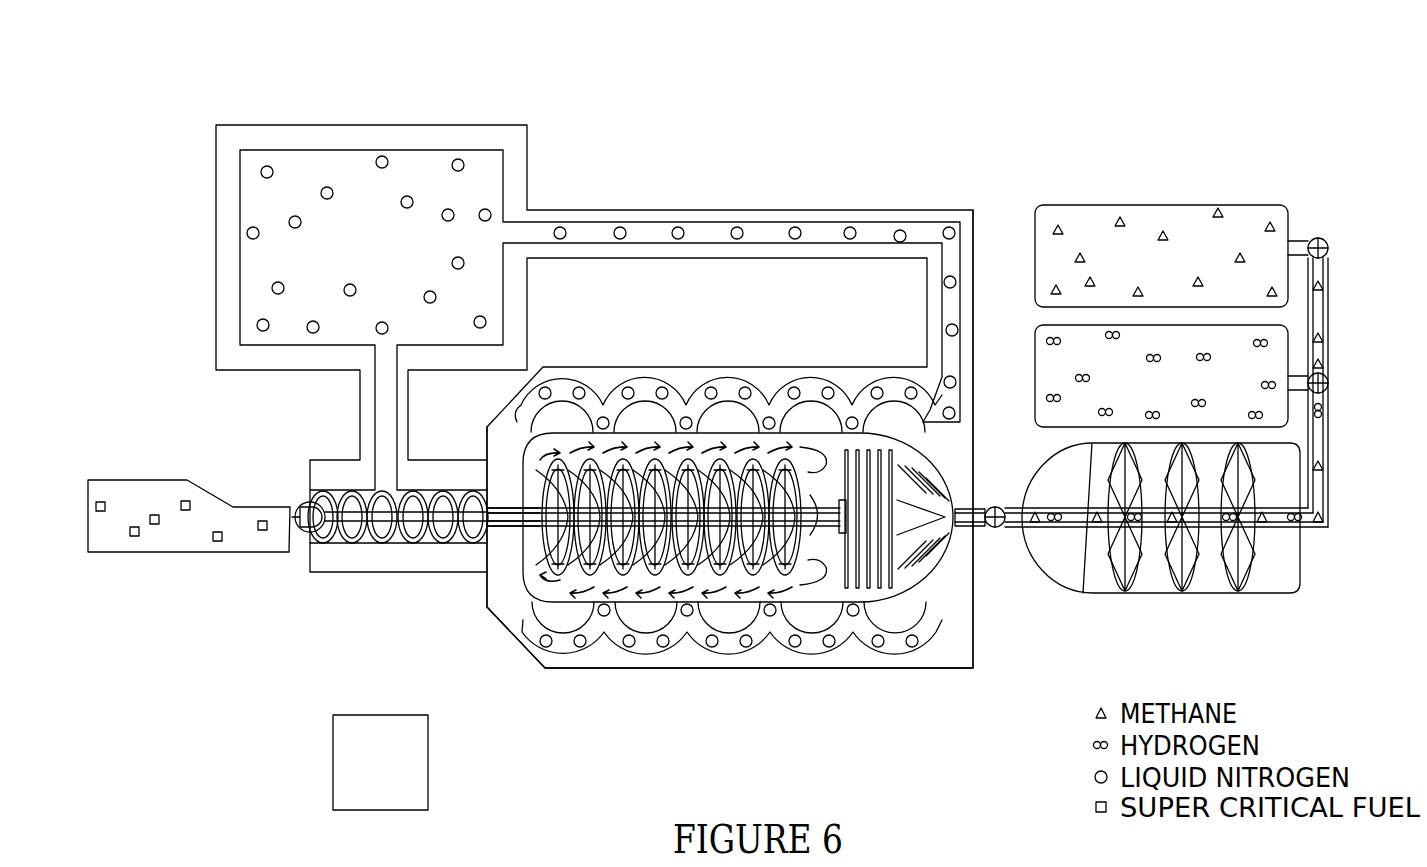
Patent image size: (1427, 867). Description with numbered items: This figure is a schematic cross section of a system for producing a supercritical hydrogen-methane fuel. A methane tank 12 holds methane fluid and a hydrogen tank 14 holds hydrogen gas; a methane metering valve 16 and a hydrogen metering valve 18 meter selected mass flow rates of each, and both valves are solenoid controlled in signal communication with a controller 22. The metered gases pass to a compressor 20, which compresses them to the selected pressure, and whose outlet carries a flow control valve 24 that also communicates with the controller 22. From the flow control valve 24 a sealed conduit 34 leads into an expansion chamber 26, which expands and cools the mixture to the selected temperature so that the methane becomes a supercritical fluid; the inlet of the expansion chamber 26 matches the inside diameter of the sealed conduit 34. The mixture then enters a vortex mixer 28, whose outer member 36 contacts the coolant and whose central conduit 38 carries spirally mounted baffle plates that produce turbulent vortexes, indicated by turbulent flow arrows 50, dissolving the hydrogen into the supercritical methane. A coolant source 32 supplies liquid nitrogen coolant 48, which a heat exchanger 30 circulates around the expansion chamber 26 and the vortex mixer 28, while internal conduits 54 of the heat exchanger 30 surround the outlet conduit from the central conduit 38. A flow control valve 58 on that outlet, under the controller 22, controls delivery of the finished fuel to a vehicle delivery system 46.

The methane tank 12 is at (1188, 205).
The hydrogen tank 14 is at (1033, 355).
The methane metering valve 16 is at (1326, 243).
The hydrogen metering valve 18 is at (1326, 390).
The compressor 20 is at (1268, 594).
The controller 22 is at (428, 780).
The flow control valve 24 is at (1005, 530).
The expansion chamber 26 is at (945, 600).
The vortex mixer 28 is at (790, 592).
The heat exchanger 30 is at (748, 668).
The coolant source 32 is at (512, 125).
The sealed conduit 34 is at (995, 506).
The outer member 36 is at (652, 606).
The central conduit 38 is at (505, 583).
The vehicle delivery system 46 is at (140, 480).
The liquid nitrogen coolant 48 is at (423, 172).
The turbulent flow arrows 50 is at (540, 578).
The internal conduits 54 is at (452, 545).
The flow control valve 58 is at (305, 530).